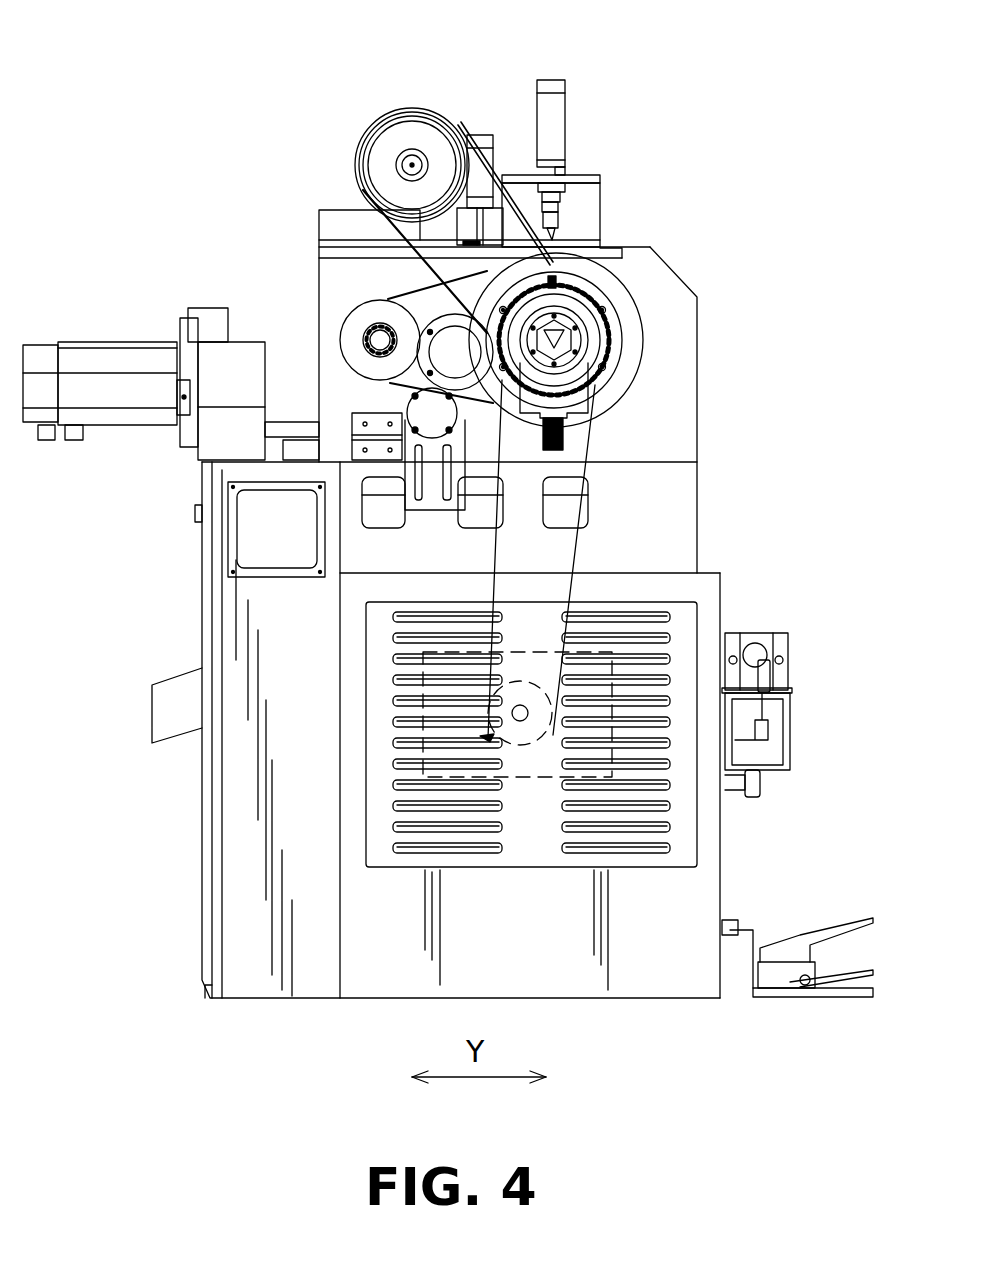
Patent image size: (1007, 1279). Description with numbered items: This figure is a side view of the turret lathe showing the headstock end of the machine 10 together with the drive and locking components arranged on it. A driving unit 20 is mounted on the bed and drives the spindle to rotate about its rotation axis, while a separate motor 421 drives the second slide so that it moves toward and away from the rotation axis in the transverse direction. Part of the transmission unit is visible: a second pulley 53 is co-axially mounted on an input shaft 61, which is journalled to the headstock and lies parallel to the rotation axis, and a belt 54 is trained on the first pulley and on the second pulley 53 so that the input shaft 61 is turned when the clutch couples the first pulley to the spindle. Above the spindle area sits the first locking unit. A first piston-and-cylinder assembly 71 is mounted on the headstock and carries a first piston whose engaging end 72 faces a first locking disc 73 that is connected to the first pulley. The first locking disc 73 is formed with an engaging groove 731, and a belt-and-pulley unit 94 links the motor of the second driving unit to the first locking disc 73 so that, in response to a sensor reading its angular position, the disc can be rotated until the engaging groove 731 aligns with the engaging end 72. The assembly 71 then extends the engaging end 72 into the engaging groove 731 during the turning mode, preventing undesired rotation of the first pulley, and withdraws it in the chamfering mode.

The machine body 10 is at (720, 580).
The driving unit 20 is at (487, 738).
The motor 421 is at (116, 362).
The second pulley 53 is at (347, 337).
The belt 54 is at (345, 228).
The input shaft 61 is at (372, 337).
The first piston-and-cylinder assembly 71 is at (563, 127).
The engaging end 72 is at (600, 215).
The first locking disc 73 is at (633, 353).
The engaging groove 731 is at (600, 248).
The belt-and-pulley unit 94 is at (418, 113).